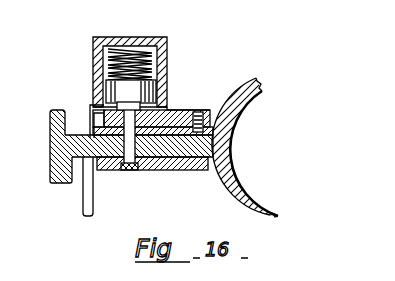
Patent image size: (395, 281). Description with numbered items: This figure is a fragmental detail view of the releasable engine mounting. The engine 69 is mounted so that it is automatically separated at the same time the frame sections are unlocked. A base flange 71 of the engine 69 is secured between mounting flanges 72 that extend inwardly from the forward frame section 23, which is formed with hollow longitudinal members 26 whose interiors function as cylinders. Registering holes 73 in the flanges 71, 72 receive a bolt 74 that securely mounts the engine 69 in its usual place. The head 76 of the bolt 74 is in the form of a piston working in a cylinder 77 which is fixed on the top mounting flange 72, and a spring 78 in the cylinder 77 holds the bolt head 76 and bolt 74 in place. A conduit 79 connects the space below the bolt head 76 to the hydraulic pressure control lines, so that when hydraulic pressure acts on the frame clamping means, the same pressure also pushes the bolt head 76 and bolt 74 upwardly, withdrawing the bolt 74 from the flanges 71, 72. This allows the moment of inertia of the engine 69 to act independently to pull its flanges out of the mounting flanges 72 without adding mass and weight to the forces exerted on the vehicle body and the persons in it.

The forward frame section 23 is at (242, 130).
The hollow longitudinal member 26 is at (272, 199).
The engine 69 is at (50, 155).
The base flange 71 is at (200, 171).
The mounting flange 72 is at (100, 130).
The registering hole 73 is at (155, 172).
The bolt 74 is at (127, 172).
The bolt head 76 is at (158, 87).
The cylinder 77 is at (170, 56).
The spring 78 is at (129, 50).
The conduit 79 is at (82, 189).